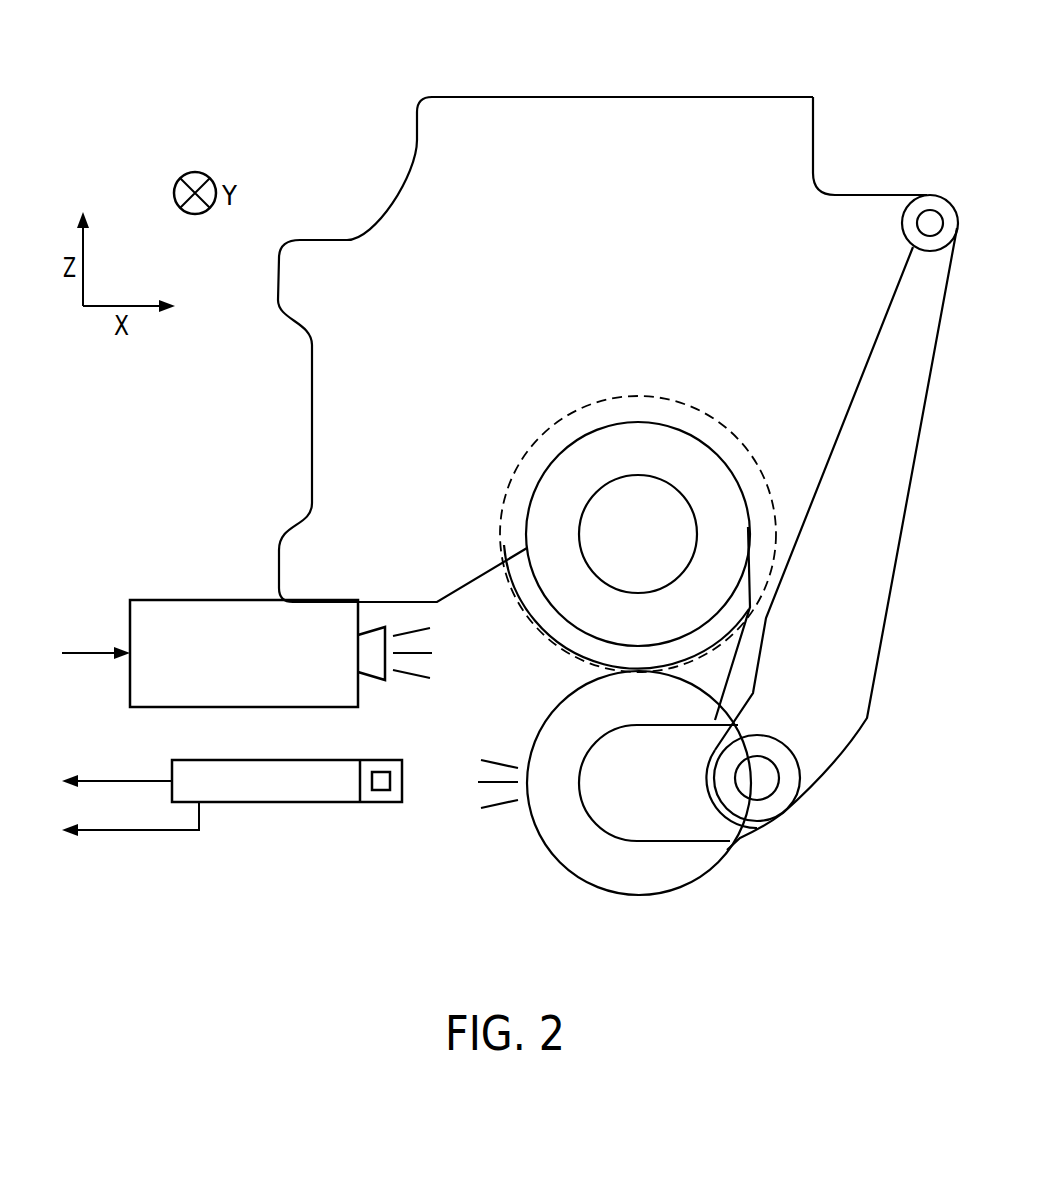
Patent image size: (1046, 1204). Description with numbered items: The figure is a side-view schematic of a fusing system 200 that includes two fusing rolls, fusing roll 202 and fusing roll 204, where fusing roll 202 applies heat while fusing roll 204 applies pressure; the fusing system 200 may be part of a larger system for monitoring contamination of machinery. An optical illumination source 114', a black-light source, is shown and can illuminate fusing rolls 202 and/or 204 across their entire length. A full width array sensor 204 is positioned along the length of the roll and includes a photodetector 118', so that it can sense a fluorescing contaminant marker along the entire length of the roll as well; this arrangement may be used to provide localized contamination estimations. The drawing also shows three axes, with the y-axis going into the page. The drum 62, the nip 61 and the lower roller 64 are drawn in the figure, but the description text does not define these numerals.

The fusing system 200 is at (848, 72).
The optical illumination source 114' is at (247, 620).
The photodetector 118' is at (391, 822).
The drum 62 is at (528, 616).
The nip 61 is at (572, 675).
The fusing roll 202 is at (715, 645).
The roller 64 is at (543, 845).
The fusing roll / full width array sensor 204 is at (262, 803).